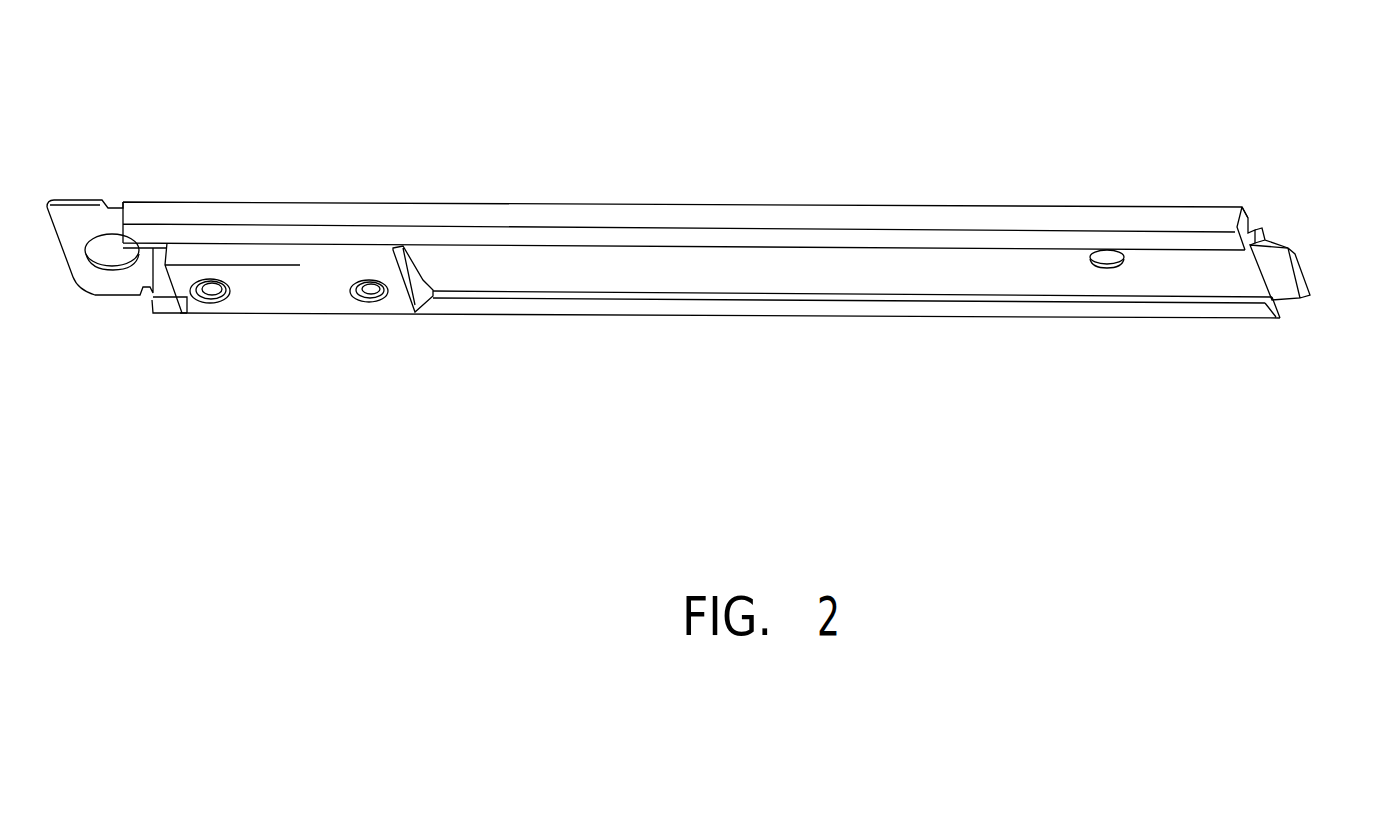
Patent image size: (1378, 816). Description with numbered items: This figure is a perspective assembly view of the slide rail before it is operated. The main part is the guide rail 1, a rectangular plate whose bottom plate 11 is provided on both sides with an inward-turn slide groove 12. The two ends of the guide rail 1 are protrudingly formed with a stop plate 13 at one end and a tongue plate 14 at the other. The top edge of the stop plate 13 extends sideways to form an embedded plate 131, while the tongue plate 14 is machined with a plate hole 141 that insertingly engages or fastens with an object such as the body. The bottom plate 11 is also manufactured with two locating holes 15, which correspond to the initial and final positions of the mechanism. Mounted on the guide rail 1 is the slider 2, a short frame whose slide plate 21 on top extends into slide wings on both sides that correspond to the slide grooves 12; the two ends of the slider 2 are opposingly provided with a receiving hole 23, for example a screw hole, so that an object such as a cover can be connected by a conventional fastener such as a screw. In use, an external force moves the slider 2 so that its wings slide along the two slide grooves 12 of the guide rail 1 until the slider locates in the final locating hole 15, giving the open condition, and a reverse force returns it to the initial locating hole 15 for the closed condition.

The guide rail 1 is at (610, 204).
The bottom plate 11 is at (807, 273).
The slide groove 12 is at (1253, 232).
The stop plate 13 is at (1260, 233).
The embedded plate 131 is at (1290, 285).
The tongue plate 14 is at (59, 220).
The plate hole 141 is at (112, 252).
The locating hole 15 is at (1110, 250).
The slider 2 is at (293, 300).
The slide plate 21 is at (327, 302).
The receiving hole 23 is at (368, 300).